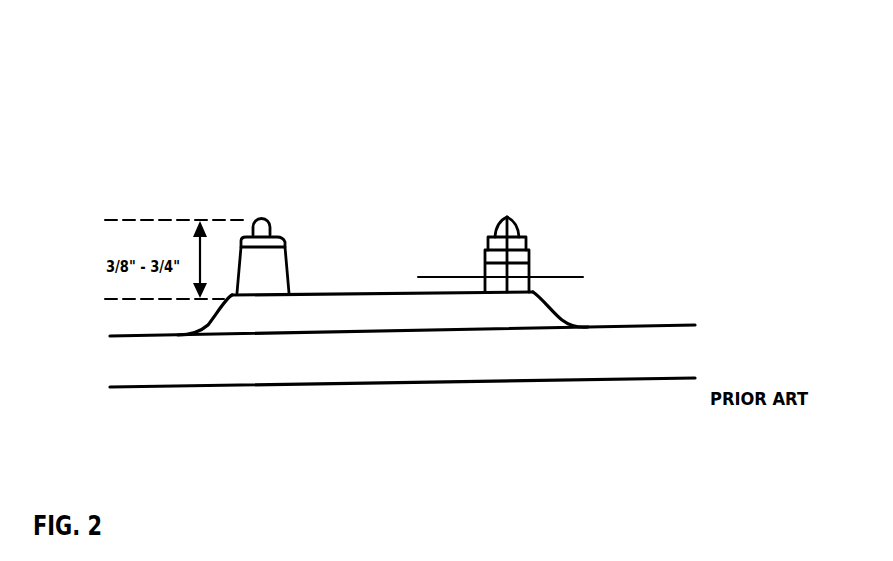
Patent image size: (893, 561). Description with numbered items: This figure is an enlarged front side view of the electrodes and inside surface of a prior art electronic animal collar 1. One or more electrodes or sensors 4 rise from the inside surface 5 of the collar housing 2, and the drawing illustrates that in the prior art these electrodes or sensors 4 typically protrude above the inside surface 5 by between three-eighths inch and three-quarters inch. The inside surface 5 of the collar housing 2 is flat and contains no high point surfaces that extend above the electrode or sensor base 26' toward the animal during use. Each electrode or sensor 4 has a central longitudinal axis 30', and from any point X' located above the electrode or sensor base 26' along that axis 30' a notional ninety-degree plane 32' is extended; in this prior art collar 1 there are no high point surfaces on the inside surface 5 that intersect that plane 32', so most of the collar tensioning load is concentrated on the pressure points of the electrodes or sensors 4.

The collar 1 is at (607, 118).
The collar housing 2 is at (482, 353).
The electrodes or sensors 4 is at (268, 276).
The inside surface 5 is at (363, 293).
The central longitudinal axis 30' is at (460, 230).
The point X' x' is at (541, 231).
The notional 90-degree plane 32' is at (616, 251).
The electrode or sensor base 26' is at (623, 289).